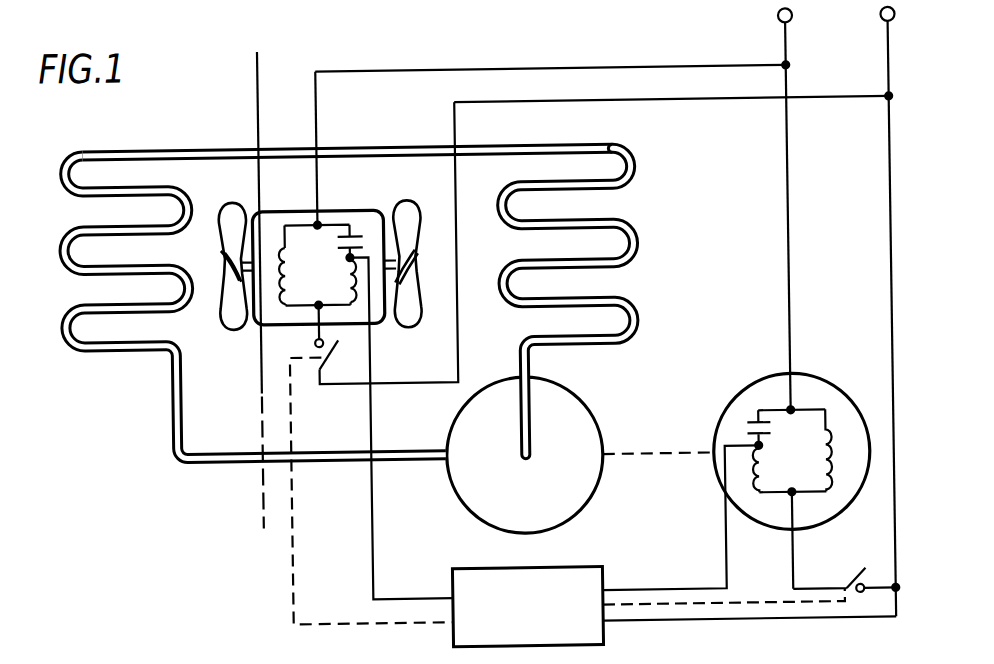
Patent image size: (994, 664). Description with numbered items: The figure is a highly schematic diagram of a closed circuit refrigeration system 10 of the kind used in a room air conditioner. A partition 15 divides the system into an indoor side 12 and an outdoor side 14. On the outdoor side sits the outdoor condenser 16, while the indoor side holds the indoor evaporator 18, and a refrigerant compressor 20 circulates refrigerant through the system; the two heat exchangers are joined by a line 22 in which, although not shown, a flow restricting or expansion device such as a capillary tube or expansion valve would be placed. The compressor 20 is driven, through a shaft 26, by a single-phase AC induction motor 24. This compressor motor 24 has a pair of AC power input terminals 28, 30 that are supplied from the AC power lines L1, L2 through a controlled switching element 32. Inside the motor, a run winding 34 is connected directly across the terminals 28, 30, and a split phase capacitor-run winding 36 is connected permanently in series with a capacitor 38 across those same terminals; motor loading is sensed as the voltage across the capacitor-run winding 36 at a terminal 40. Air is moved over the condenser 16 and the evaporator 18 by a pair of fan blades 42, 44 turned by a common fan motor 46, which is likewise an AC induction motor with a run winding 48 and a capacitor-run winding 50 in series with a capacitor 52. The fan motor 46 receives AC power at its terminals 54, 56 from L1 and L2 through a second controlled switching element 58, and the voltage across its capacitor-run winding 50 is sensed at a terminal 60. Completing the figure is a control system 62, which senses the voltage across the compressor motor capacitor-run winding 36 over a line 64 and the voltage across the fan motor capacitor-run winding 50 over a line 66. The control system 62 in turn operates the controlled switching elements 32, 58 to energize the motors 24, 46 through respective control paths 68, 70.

The closed circuit refrigeration system 10 is at (208, 64).
The indoor side 12 is at (198, 109).
The outdoor side 14 is at (372, 46).
The partition 15 is at (261, 121).
The outdoor condenser 16 is at (620, 174).
The indoor evaporator 18 is at (80, 146).
The refrigerant compressor 20 is at (574, 394).
The line 22 is at (375, 144).
The single-phase AC induction motor 24 is at (822, 383).
The shaft 26 is at (608, 457).
The AC power input terminal 28 is at (790, 414).
The AC power input terminal 30 is at (806, 480).
The controlled switching element 32 is at (845, 566).
The run winding 34 is at (828, 440).
The capacitor-run winding 36 is at (752, 484).
The capacitor 38 is at (764, 439).
The terminal 40 is at (756, 449).
The fan blade 42 is at (410, 211).
The fan blade 44 is at (228, 216).
The fan motor 46 is at (339, 209).
The run winding 48 is at (286, 272).
The capacitor-run winding 50 is at (355, 321).
The capacitor 52 is at (358, 235).
The terminal 54 is at (319, 222).
The terminal 56 is at (318, 305).
The controlled switching element 58 is at (308, 382).
The terminal 60 is at (349, 256).
The control system 62 is at (450, 568).
The line 64 is at (676, 590).
The line 66 is at (366, 556).
The control path 68 is at (733, 606).
The control path 70 is at (290, 545).
The AC power line L1 is at (766, 209).
The AC power line L2 is at (873, 312).